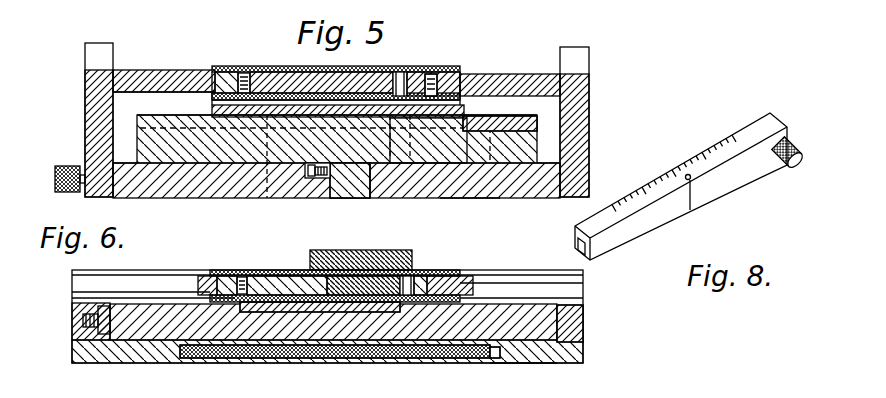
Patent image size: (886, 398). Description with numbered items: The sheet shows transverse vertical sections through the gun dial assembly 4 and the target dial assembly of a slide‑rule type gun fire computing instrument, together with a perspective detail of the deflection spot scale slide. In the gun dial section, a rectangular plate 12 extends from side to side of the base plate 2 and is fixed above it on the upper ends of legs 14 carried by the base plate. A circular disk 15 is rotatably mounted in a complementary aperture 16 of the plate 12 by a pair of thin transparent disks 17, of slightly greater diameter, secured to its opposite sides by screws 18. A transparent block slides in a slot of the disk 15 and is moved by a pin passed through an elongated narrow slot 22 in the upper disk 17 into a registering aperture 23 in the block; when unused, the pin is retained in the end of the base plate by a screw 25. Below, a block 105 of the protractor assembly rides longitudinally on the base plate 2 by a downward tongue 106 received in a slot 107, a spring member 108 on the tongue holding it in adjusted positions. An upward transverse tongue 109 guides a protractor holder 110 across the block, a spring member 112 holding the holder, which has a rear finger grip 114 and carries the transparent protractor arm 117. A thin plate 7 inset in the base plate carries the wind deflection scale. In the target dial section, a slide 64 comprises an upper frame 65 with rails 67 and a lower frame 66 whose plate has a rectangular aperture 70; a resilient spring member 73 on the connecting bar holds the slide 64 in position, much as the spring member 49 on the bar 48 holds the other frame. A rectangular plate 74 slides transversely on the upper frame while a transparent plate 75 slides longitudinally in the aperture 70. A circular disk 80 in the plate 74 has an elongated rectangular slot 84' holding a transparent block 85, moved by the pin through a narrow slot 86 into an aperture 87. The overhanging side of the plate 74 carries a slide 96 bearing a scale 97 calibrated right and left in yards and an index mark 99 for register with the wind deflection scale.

In FIG. 5, the gun dial assembly 4 is at (232, 54).
In FIG. 5, the rectangular plate 12 is at (516, 73).
In FIG. 5, the legs 14 is at (90, 114).
In FIG. 5, the circular disk 15 is at (257, 72).
In FIG. 5, the complementary aperture 16 is at (218, 78).
In FIG. 5, the thin transparent disks 17 is at (456, 72).
In FIG. 5, the screws 18 is at (438, 72).
In FIG. 5, the elongated narrow slot 22 is at (414, 70).
In FIG. 5, the aperture 23 is at (405, 62).
In FIG. 5, the screw 25 is at (60, 192).
In FIG. 5, the block 105 is at (213, 150).
In FIG. 5, the tongue 106 is at (352, 172).
In FIG. 5, the slot 107 is at (365, 173).
In FIG. 5, the spring member 108 is at (313, 178).
In FIG. 5, the tongue 109 is at (137, 117).
In FIG. 5, the protractor holder 110 is at (352, 112).
In FIG. 5, the spring member 112 is at (200, 114).
In FIG. 5, the finger grip 114 is at (272, 199).
In FIG. 5, the protractor arm 117 is at (470, 200).
In FIG. 6, the base plate 2 is at (215, 333).
In FIG. 6, the thin plate 7 is at (280, 345).
In FIG. 6, the bar 48 is at (576, 351).
In FIG. 6, the resilient spring member 49 is at (523, 380).
In FIG. 6, the slide 64 is at (528, 250).
In FIG. 6, the upper frame 65 is at (95, 268).
In FIG. 6, the lower frame 66 is at (584, 362).
In FIG. 6, the rail 67 is at (555, 283).
In FIG. 6, the rectangular aperture 70 is at (480, 360).
In FIG. 6, the resilient spring member 73 is at (105, 337).
In FIG. 6, the rectangular plate 74 is at (207, 276).
In FIG. 6, the transparent plate 75 is at (327, 357).
In FIG. 6, the circular disk 80 is at (242, 277).
In FIG. 6, the elongated rectangular slot 84' is at (338, 269).
In FIG. 6, the transparent block 85 is at (392, 284).
In FIG. 6, the elongated narrow slot 86 is at (406, 276).
In FIG. 6, the aperture 87 is at (421, 285).
In FIG. 8, the slide 96 is at (787, 128).
In FIG. 8, the scale 97 is at (700, 158).
In FIG. 8, the index mark 99 is at (690, 210).